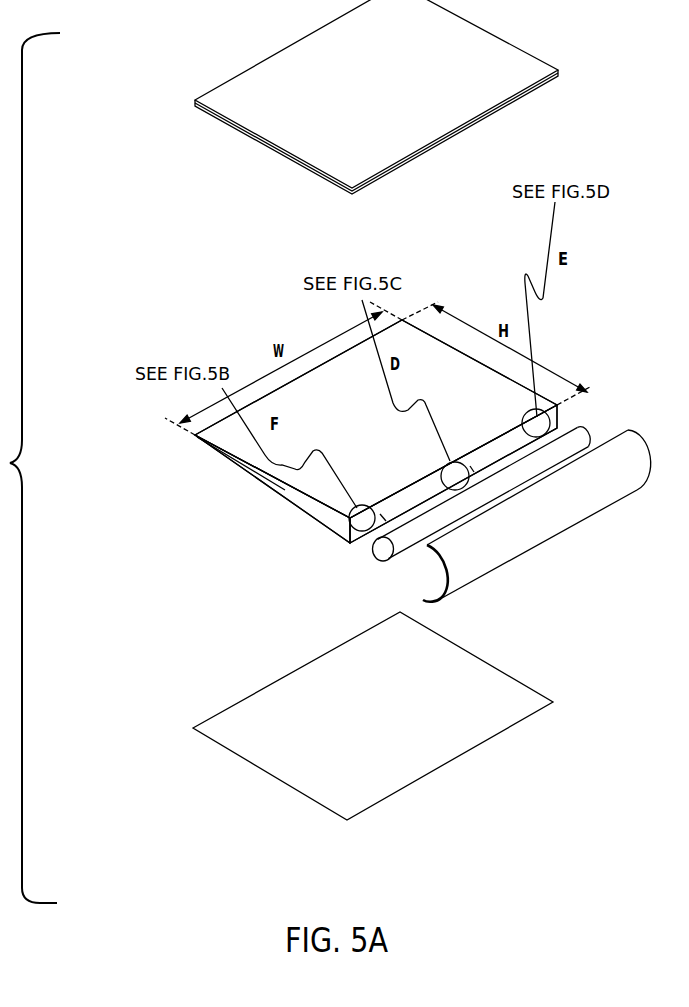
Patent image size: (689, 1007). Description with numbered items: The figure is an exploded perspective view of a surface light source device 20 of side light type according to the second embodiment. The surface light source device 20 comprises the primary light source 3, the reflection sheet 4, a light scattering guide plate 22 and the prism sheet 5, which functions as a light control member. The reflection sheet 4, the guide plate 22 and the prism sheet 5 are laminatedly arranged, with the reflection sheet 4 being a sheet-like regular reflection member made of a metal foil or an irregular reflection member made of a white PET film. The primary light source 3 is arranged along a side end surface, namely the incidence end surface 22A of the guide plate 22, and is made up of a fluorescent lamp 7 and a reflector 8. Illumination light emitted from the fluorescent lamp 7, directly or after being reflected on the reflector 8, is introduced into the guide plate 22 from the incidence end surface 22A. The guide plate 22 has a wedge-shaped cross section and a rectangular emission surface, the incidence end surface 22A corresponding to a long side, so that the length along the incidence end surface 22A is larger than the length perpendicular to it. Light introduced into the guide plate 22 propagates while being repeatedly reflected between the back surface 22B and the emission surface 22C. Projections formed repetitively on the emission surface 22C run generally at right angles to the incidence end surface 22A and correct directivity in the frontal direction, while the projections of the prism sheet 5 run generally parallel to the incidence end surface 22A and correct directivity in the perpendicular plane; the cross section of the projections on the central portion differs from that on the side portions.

The primary light source 3 is at (512, 557).
The reflection sheet 4 is at (385, 792).
The prism sheet 5 is at (450, 37).
The fluorescent lamp 7 is at (563, 452).
The reflector 8 is at (547, 515).
The surface light source device 20 is at (163, 807).
The light scattering guide plate 22 is at (366, 468).
The incidence end surface 22A is at (495, 453).
The back surface 22B is at (282, 503).
The emission surface 22C is at (260, 455).